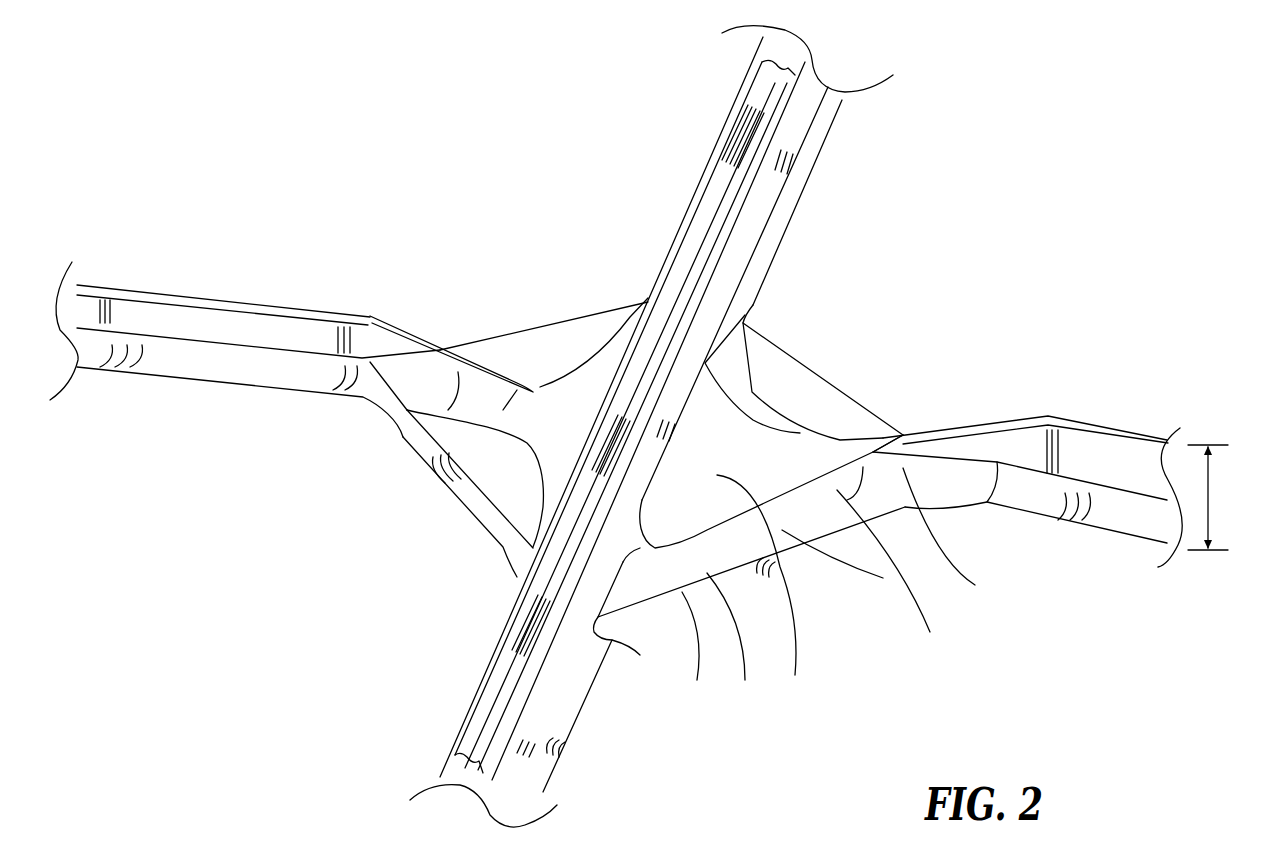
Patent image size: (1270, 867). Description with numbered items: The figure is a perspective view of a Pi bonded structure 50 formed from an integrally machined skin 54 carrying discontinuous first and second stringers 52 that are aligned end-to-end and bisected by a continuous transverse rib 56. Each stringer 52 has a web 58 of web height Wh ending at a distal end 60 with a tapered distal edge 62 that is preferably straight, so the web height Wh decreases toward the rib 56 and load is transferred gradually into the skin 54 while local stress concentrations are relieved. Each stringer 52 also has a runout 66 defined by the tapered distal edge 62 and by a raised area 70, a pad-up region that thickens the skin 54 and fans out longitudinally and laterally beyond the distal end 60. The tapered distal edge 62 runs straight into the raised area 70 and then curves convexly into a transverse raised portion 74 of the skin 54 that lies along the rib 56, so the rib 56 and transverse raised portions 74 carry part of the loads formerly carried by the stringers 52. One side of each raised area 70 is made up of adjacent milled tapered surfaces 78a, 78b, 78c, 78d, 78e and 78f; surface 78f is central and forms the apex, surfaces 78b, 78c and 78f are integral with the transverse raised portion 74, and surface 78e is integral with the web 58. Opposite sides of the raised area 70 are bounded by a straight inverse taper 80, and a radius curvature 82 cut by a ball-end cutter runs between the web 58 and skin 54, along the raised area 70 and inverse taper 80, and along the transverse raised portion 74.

The Pi bonded structure 50 is at (1000, 192).
The stringer 52 is at (616, 379).
The skin 54 is at (404, 191).
The transverse rib 56 is at (651, 426).
The web 58 is at (1122, 462).
The distal end 60 is at (412, 313).
The tapered distal edge 62 is at (424, 345).
The runout 66 is at (498, 312).
The raised area 70 is at (824, 350).
The transverse raised portion 74 is at (742, 118).
The tapered surface 78a is at (846, 569).
The tapered surface 78b is at (700, 649).
The tapered surface 78c is at (737, 639).
The tapered surface 78d is at (897, 574).
The tapered surface 78e is at (956, 539).
The tapered surface 78f is at (767, 588).
The inverse taper 80 is at (596, 320).
The radius curvature 82 is at (796, 192).
The web height Wh is at (1210, 500).